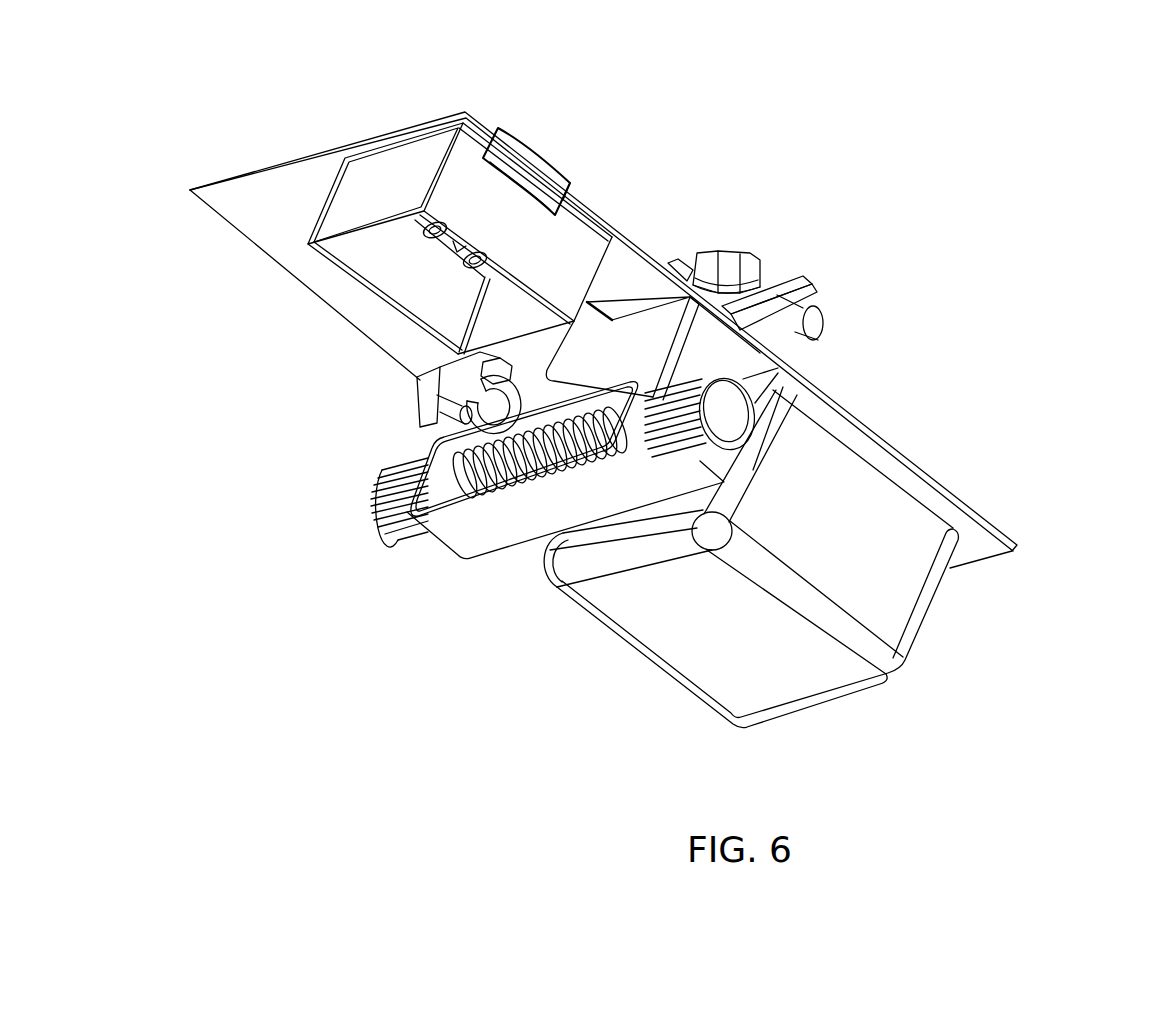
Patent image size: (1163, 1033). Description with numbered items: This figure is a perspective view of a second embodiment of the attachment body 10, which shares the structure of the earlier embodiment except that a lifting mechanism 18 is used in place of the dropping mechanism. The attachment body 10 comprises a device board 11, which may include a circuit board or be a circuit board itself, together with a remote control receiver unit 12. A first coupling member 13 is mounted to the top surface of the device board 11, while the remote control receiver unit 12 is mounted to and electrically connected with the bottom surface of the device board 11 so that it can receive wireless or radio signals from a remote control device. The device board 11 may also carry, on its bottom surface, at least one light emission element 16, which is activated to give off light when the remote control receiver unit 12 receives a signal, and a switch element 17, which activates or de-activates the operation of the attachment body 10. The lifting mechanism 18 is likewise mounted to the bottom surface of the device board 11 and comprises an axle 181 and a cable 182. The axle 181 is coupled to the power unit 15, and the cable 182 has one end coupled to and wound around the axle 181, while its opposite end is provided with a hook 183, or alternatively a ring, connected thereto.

The attachment body 10 is at (1083, 158).
The device board 11 is at (993, 537).
The remote control receiver unit 12 is at (890, 590).
The first coupling member 13 is at (810, 290).
The power unit 15 is at (738, 418).
The light emission element 16 is at (433, 230).
The switch element 17 is at (543, 172).
The lifting mechanism 18 is at (640, 478).
The axle 181 is at (613, 447).
The cable 182 is at (490, 335).
The hook 183 is at (450, 423).